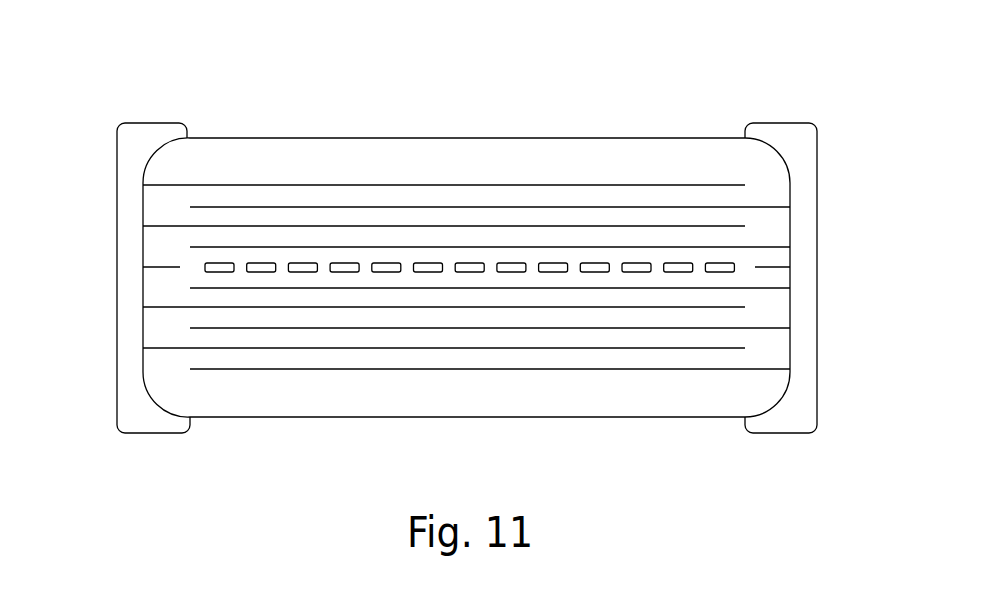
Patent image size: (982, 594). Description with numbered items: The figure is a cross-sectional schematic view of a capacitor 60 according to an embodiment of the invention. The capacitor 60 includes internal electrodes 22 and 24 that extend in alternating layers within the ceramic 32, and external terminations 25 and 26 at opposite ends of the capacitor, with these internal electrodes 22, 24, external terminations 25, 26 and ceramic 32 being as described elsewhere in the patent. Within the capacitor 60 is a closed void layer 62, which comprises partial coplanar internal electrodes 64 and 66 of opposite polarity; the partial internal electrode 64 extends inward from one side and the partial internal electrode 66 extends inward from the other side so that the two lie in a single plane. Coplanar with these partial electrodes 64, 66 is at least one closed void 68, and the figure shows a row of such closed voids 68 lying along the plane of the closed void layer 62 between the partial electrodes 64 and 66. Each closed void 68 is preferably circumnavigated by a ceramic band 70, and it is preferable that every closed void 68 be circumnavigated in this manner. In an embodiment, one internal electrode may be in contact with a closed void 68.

The capacitor 60 is at (464, 281).
The closed void layer 62 is at (464, 270).
The ceramic 32 is at (253, 318).
The external termination 25 is at (138, 148).
The external termination 26 is at (797, 142).
The internal electrode 22 is at (318, 223).
The internal electrode 24 is at (708, 245).
The partial coplanar internal electrode 64 is at (165, 267).
The partial coplanar internal electrode 66 is at (773, 266).
The closed void 68 is at (467, 263).
The ceramic band 70 is at (527, 265).